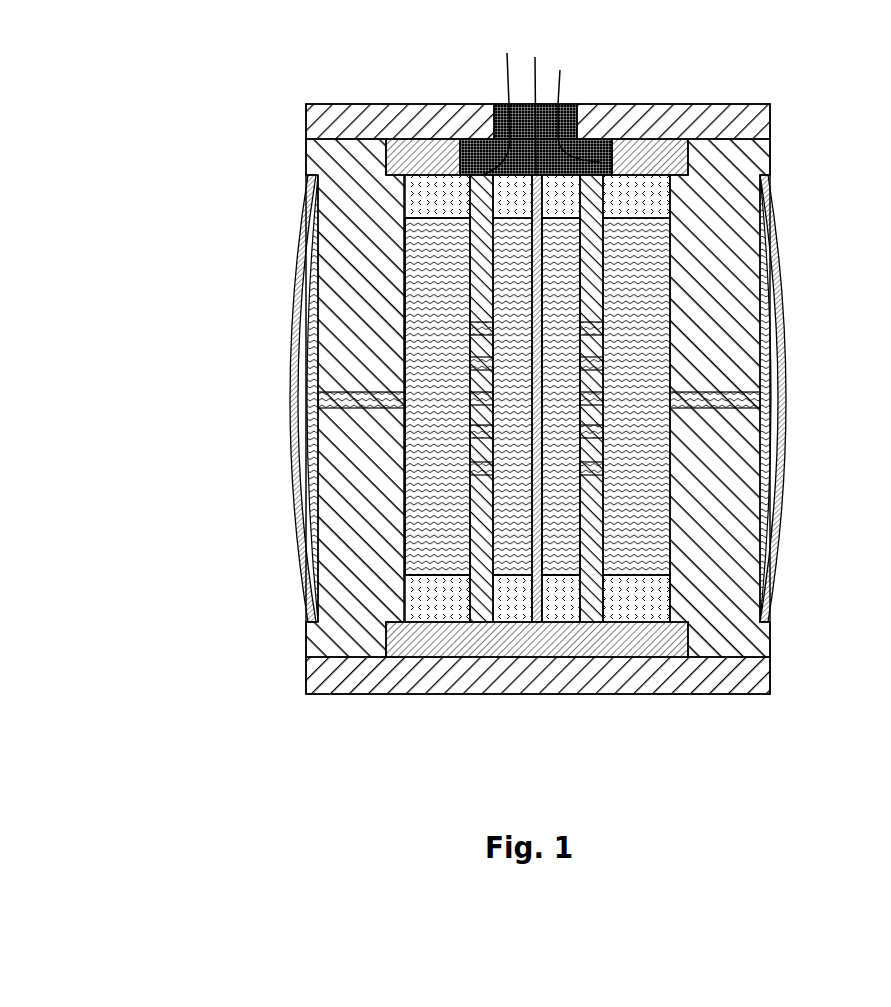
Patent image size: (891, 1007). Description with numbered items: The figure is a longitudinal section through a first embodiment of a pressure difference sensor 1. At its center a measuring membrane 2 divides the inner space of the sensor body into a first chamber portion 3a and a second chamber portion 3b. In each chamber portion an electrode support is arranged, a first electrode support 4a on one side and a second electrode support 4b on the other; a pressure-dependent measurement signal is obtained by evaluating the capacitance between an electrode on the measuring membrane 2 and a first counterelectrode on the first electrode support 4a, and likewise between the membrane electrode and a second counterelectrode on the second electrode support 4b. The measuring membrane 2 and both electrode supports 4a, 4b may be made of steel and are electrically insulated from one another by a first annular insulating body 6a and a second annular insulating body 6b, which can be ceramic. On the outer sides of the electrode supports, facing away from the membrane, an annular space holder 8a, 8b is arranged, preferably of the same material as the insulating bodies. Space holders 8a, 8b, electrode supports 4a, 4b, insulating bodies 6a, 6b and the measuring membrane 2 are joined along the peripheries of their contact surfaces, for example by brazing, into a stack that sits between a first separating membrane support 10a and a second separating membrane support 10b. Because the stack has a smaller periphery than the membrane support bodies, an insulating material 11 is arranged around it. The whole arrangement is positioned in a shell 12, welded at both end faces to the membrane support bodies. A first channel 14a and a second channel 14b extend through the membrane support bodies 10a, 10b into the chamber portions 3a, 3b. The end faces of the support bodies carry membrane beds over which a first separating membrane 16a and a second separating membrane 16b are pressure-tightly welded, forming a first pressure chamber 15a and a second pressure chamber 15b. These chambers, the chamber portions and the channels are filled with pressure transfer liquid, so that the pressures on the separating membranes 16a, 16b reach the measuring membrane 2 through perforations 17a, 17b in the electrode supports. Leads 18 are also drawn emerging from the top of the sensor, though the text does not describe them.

The pressure difference sensor 1 is at (163, 140).
The measuring membrane 2 is at (542, 463).
The first chamber portion 3a is at (435, 510).
The second chamber portion 3b is at (567, 503).
The first electrode support 4a is at (478, 255).
The second electrode support 4b is at (597, 252).
The first annular insulating body 6a is at (510, 608).
The second annular insulating body 6b is at (563, 608).
The first annular space holder 8a is at (438, 608).
The second annular space holder 8b is at (628, 608).
The first separating membrane support 10a is at (353, 272).
The second separating membrane support 10b is at (712, 262).
The insulating material 11 is at (408, 647).
The shell 12 is at (706, 675).
The first channel 14a is at (345, 401).
The second channel 14b is at (722, 401).
The first pressure chamber 15a is at (312, 466).
The second pressure chamber 15b is at (766, 466).
The first separating membrane 16a is at (292, 312).
The second separating membrane 16b is at (784, 312).
The perforations 17a is at (465, 330).
The perforations 17b is at (608, 330).
The connection leads 18 is at (562, 105).